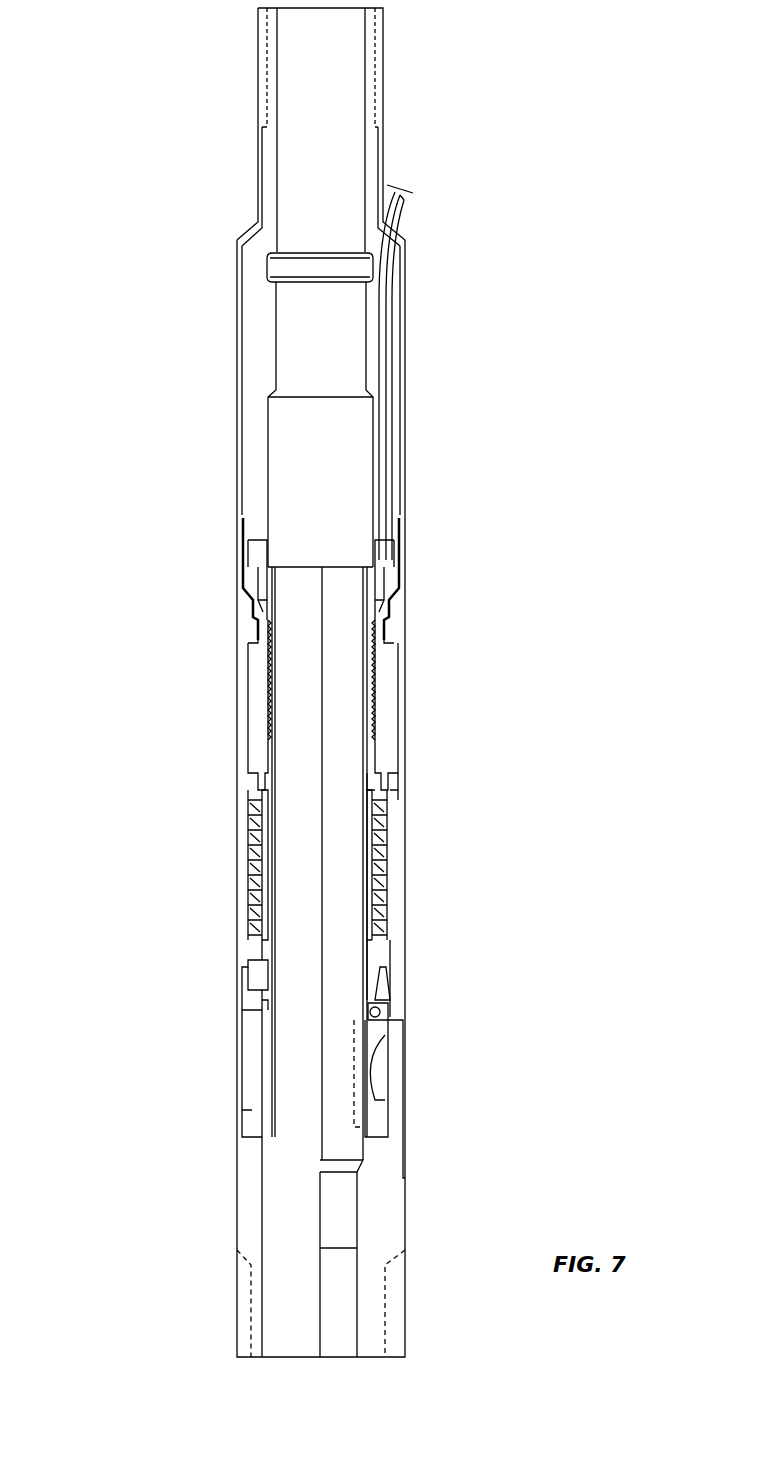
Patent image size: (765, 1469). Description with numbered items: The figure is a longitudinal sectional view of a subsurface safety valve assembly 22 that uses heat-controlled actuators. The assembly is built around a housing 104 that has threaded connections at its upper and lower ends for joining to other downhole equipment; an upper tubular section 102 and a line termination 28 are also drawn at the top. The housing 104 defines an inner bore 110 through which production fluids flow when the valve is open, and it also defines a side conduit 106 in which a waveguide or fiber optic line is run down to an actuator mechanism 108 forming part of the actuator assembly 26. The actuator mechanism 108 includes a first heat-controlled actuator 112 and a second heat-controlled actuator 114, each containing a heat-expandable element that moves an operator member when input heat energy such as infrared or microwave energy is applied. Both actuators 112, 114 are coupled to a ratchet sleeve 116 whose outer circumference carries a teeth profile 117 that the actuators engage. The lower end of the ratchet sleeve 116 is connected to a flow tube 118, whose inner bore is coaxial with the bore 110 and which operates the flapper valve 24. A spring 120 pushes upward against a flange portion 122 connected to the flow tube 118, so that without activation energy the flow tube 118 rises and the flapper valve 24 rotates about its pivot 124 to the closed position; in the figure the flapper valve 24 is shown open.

The subsurface safety valve assembly 22 is at (513, 243).
The flapper valve 24 is at (315, 1059).
The actuator assembly 26 is at (143, 525).
The cable end 28 is at (412, 198).
The outer housing 102 is at (385, 82).
The housing 104 is at (377, 168).
The side conduit 106 is at (400, 253).
The actuator mechanism 108 is at (297, 561).
The inner bore 110 is at (320, 706).
The first heat-controlled actuator 112 is at (212, 582).
The second heat-controlled actuator 114 is at (427, 581).
The ratchet sleeve 116 is at (277, 667).
The teeth profile 117 is at (377, 673).
The flow tube 118 is at (265, 832).
The spring 120 is at (384, 849).
The flange portion 122 is at (384, 804).
The pivot 124 is at (380, 1010).